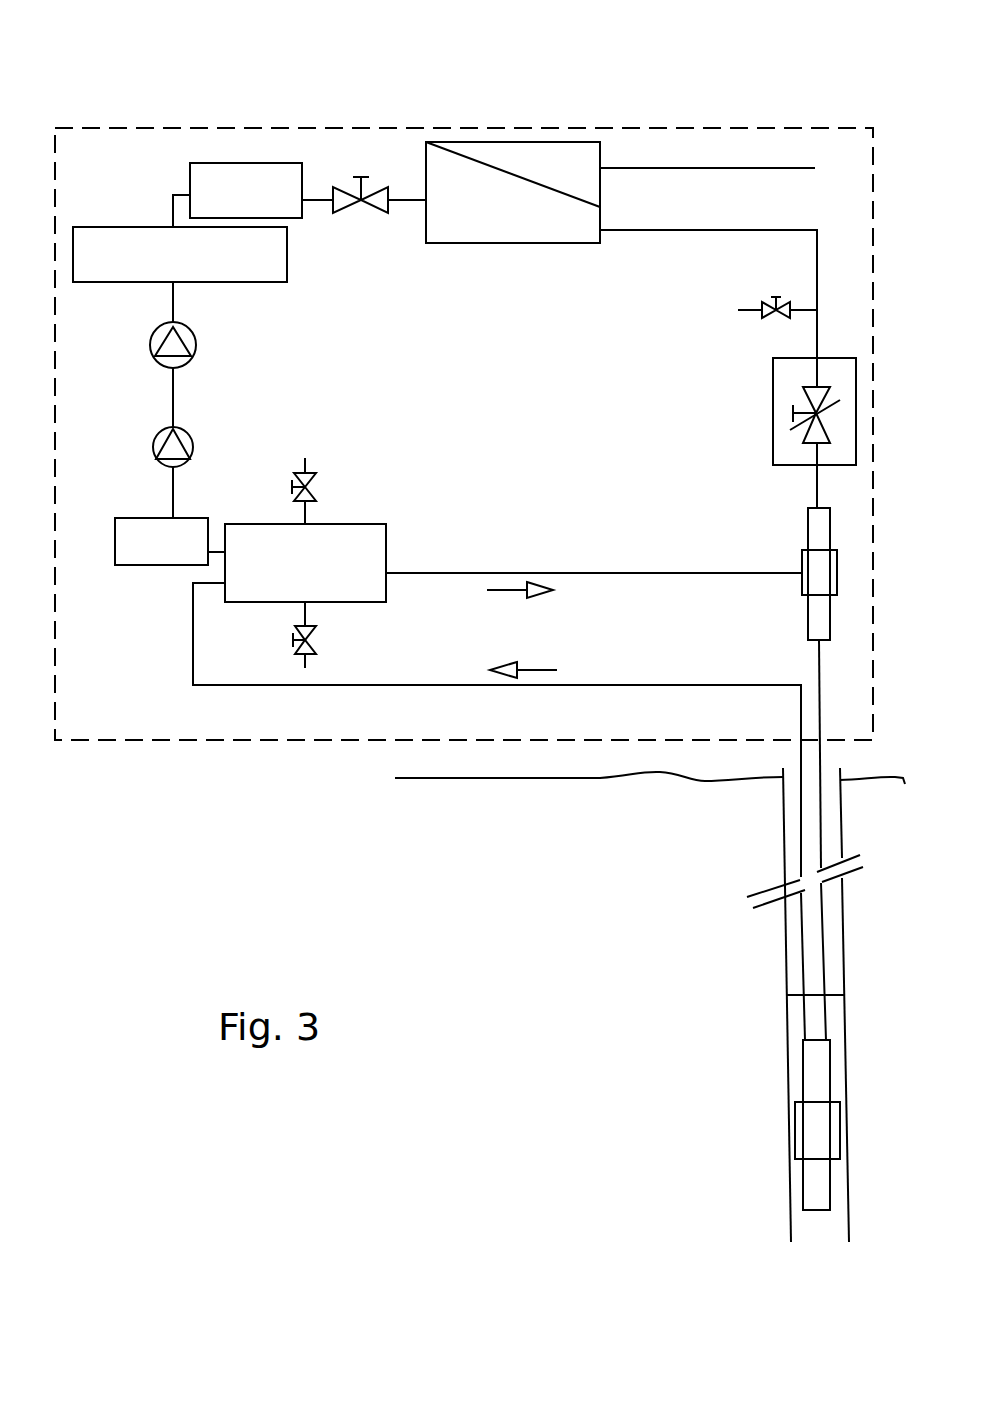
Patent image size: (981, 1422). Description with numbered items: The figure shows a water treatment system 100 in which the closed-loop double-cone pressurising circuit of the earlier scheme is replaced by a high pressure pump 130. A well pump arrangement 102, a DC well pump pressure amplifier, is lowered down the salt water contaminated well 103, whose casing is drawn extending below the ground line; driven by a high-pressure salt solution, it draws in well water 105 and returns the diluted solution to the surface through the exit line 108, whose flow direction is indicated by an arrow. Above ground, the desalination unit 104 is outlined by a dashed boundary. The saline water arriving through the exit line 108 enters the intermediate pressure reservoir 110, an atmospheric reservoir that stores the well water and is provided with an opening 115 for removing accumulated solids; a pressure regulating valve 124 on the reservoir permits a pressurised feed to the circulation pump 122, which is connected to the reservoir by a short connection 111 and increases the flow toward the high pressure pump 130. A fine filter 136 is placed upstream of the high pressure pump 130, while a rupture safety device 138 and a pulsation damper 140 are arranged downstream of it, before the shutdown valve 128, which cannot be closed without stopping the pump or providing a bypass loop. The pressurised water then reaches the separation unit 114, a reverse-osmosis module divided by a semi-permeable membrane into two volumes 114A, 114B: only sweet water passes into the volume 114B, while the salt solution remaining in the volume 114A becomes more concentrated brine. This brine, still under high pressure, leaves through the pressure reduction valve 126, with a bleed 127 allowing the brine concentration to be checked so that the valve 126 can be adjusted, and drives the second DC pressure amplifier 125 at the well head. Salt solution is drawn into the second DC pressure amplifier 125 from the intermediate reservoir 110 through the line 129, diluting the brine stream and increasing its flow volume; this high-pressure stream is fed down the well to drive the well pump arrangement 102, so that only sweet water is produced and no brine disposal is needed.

The water treatment system 100 is at (305, 869).
The well pump arrangement 102 is at (795, 1102).
The salt water contaminated well 103 is at (782, 790).
The desalination unit 104 is at (375, 122).
The well water 105 is at (793, 1022).
The exit line 108 is at (565, 685).
The intermediate pressure reservoir 110 is at (350, 602).
The connection line 111 is at (217, 553).
The separation unit 114 is at (621, 186).
The volume 114A is at (463, 219).
The volume 114B is at (540, 174).
The opening 115 is at (305, 643).
The circulation pump 122 is at (190, 435).
The pressure regulating valve 124 is at (307, 490).
The second DC pressure amplifier 125 is at (802, 587).
The pressure reduction valve 126 is at (825, 358).
The bleed 127 is at (770, 298).
The shutdown valve 128 is at (380, 188).
The line 129 is at (658, 573).
The high pressure pump 130 is at (190, 326).
The fine filter 136 is at (161, 541).
The rupture safety device 138 is at (145, 274).
The pulsation damper 140 is at (207, 162).